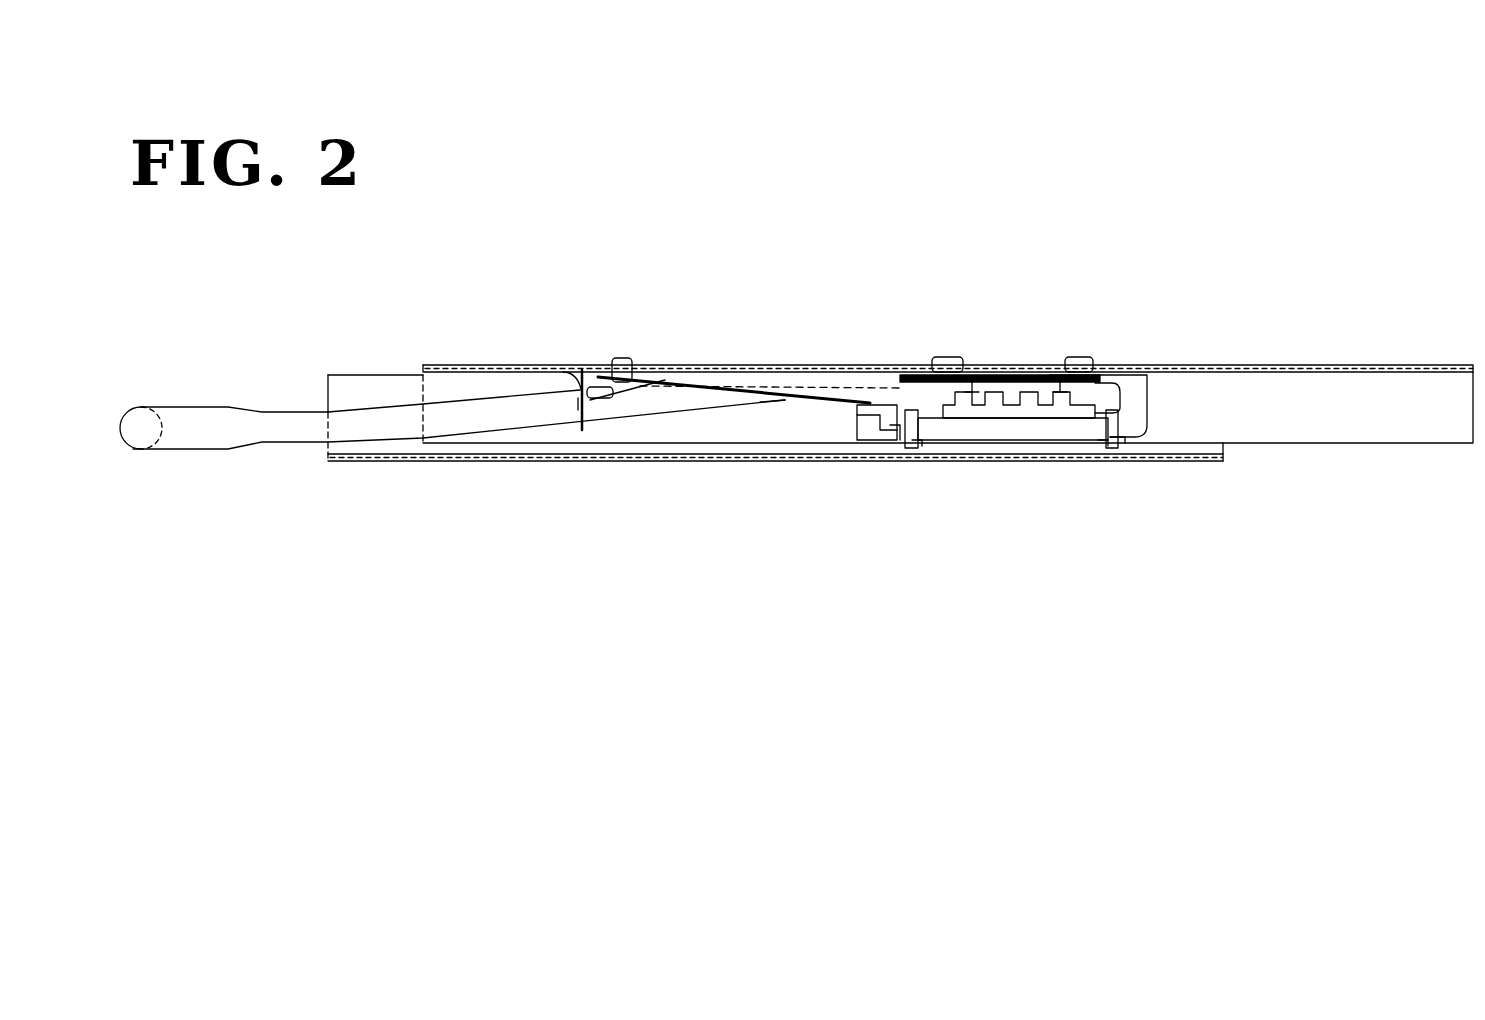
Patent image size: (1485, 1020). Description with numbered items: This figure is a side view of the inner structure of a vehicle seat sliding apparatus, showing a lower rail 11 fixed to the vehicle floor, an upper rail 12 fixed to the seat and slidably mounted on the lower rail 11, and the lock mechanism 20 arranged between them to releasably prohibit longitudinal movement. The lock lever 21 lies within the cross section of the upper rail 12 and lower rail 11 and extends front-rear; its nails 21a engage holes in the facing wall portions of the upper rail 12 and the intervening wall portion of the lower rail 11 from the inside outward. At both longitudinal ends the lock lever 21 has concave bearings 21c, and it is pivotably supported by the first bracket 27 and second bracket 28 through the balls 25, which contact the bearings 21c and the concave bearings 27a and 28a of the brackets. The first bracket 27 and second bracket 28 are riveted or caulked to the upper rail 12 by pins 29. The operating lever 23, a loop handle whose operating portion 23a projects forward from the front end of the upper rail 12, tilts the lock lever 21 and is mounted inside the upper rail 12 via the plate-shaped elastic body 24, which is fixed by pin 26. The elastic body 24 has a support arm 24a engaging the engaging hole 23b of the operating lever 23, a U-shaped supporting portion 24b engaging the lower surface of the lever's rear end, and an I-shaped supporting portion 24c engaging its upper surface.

The lower rail 11 is at (690, 461).
The upper rail 12 is at (1333, 365).
The lock mechanism 20 is at (982, 600).
The lock lever 21 is at (1007, 440).
The nails 21a is at (1060, 390).
The bearings 21c is at (917, 440).
The operating lever 23 is at (287, 408).
The operating portion 23a is at (142, 417).
The engaging hole 23b is at (557, 368).
The plate-shaped elastic body 24 is at (700, 368).
The support arm 24a is at (578, 405).
The U-shaped supporting portion 24b is at (785, 400).
The I-shaped supporting portion 24c is at (815, 368).
The balls 25 is at (912, 448).
The pin 26 is at (620, 358).
The first bracket 27 is at (1168, 395).
The bearing 27a is at (1113, 440).
The second bracket 28 is at (853, 440).
The bearing 28a is at (902, 440).
The pins 29 is at (945, 357).